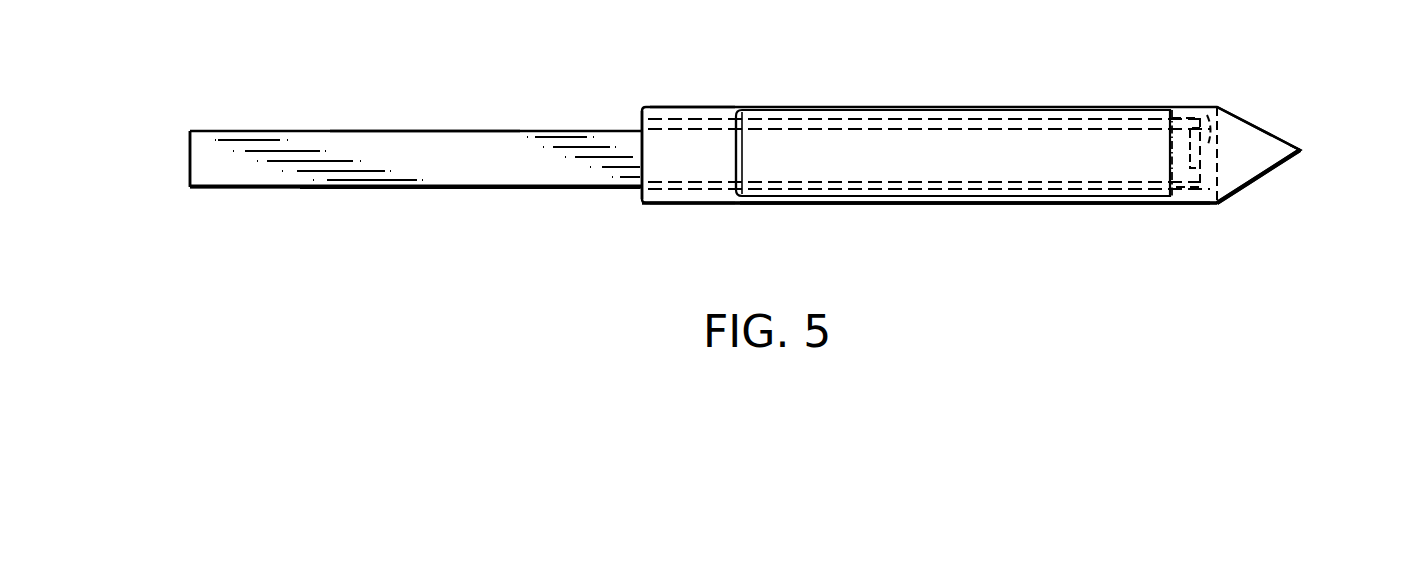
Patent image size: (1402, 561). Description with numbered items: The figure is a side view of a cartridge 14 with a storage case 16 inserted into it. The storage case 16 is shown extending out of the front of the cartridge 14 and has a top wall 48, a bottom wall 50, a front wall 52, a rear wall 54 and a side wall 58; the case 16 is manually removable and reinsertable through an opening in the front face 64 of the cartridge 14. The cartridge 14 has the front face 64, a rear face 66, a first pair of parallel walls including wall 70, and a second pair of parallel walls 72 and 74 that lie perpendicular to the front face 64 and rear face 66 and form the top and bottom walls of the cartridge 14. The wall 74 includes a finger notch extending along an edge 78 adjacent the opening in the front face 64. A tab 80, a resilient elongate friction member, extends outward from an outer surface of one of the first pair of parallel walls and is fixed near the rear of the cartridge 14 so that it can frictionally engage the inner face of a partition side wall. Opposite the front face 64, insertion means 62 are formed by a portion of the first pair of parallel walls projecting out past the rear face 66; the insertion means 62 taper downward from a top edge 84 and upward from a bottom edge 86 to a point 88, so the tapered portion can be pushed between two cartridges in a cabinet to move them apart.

The cartridge 14 is at (985, 103).
The storage case 16 is at (331, 130).
The top wall 48 is at (427, 131).
The bottom wall 50 is at (391, 187).
The front wall 52 is at (190, 158).
The rear wall 54 is at (1206, 112).
The side wall 58 is at (507, 168).
The insertion means 62 is at (1272, 179).
The front face 64 is at (640, 197).
The rear face 66 is at (1226, 132).
The first parallel wall 70 is at (692, 140).
The second parallel wall 72 is at (945, 204).
The second parallel wall 74 is at (810, 108).
The edge 78 is at (642, 112).
The tab 80 is at (730, 164).
The top edge 84 is at (1262, 117).
The bottom edge 86 is at (1241, 194).
The point 88 is at (1300, 150).